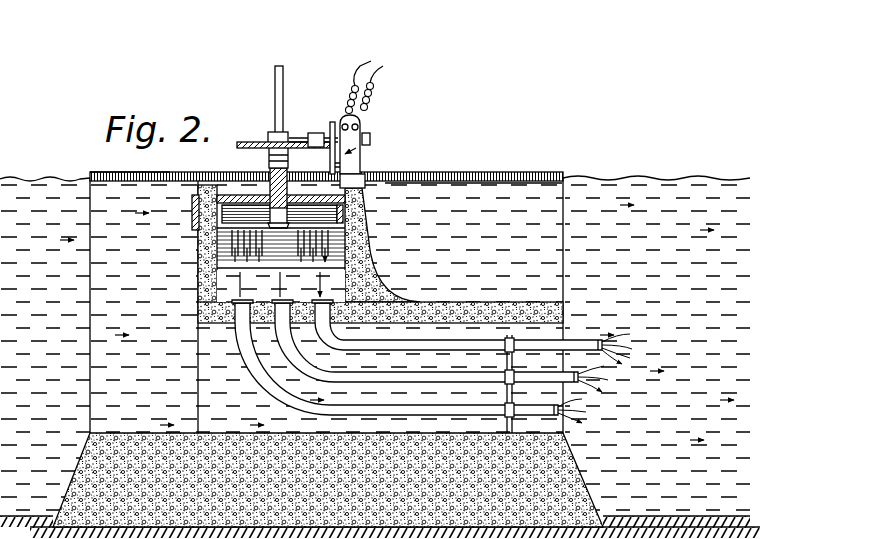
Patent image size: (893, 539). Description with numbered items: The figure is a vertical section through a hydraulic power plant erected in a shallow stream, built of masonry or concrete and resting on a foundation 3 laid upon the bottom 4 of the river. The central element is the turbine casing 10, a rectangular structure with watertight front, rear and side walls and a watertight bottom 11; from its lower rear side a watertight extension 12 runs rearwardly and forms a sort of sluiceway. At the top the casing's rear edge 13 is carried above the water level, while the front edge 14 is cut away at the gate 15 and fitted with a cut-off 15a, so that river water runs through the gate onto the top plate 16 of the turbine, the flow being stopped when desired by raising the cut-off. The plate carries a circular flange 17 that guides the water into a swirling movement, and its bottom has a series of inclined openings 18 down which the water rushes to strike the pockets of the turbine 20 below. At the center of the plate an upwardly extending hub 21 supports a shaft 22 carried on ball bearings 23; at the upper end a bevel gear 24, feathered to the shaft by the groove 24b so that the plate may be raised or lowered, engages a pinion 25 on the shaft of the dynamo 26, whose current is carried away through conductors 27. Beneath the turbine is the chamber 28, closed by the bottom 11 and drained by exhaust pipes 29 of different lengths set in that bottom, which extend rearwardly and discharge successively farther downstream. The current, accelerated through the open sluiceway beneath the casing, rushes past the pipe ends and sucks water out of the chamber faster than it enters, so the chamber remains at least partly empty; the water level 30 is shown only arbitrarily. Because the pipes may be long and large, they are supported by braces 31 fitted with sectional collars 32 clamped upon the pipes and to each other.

The foundation 3 is at (85, 462).
The bottom of the river 4 is at (27, 516).
The turbine casing 10 is at (200, 283).
The watertight bottom 11 is at (303, 322).
The watertight extension 12 is at (462, 304).
The rear edge 13 is at (365, 180).
The front edge 14 is at (184, 174).
The cut-away gate 15 is at (202, 189).
The cut-off 15a is at (192, 207).
The top plate 16 is at (350, 168).
The circular flange 17 is at (227, 174).
The inclined openings 18 is at (262, 186).
The turbine 20 is at (281, 216).
The hub 21 is at (294, 178).
The shaft 22 is at (217, 215).
The ball bearings 23 is at (289, 132).
The bevel gear 24 is at (292, 142).
The groove 24b is at (282, 66).
The pinion 25 is at (319, 133).
The dynamo 26 is at (371, 140).
The conductors 27 is at (370, 79).
The chamber 28 is at (310, 252).
The exhaust pipes 29 is at (235, 322).
The water level 30 is at (438, 178).
The braces 31 is at (513, 362).
The sectional collars 32 is at (508, 340).